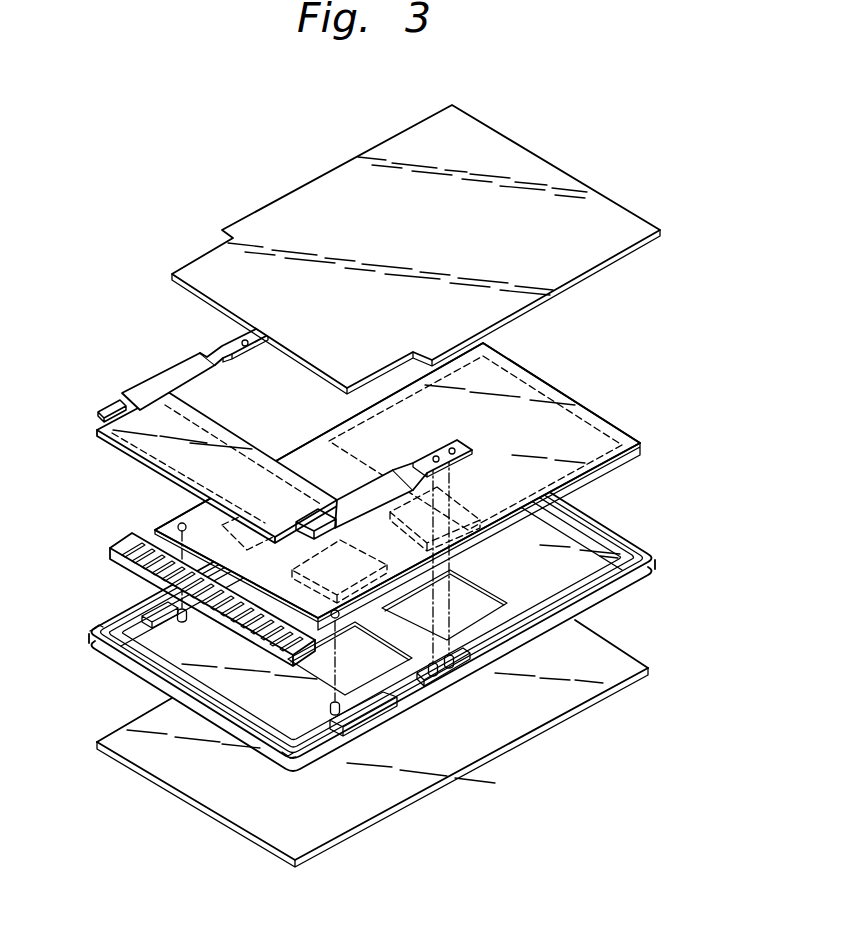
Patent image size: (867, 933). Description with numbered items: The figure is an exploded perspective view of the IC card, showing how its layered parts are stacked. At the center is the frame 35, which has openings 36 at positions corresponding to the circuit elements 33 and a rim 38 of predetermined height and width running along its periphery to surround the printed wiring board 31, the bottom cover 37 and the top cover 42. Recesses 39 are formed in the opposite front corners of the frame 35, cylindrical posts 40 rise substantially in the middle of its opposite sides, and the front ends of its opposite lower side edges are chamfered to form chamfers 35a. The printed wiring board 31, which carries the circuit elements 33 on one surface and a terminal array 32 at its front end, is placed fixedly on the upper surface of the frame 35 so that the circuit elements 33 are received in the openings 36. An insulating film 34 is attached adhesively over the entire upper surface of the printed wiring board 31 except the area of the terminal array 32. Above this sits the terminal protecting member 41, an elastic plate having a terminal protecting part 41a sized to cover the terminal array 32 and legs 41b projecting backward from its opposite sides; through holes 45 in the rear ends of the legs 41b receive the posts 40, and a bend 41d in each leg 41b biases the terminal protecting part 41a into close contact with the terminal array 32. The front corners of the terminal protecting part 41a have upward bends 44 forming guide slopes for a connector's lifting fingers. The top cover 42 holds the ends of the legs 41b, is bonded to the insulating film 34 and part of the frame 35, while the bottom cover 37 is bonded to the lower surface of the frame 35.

The printed wiring board 31 is at (155, 531).
The terminal array 32 is at (118, 570).
The circuit elements 33 is at (398, 456).
The insulating film 34 is at (176, 506).
The frame 35 is at (600, 562).
The chamfers 35a is at (89, 634).
The openings 36 is at (482, 590).
The bottom cover 37 is at (142, 758).
The rim 38 is at (617, 527).
The recesses 39 is at (93, 644).
The cylindrical posts 40 is at (451, 667).
The terminal protecting member 41 is at (276, 418).
The terminal protecting part 41a is at (222, 433).
The legs 41b is at (177, 367).
The bend 41d is at (207, 346).
The top cover 42 is at (588, 263).
The upward bends 44 is at (112, 412).
The through holes 45 is at (250, 355).